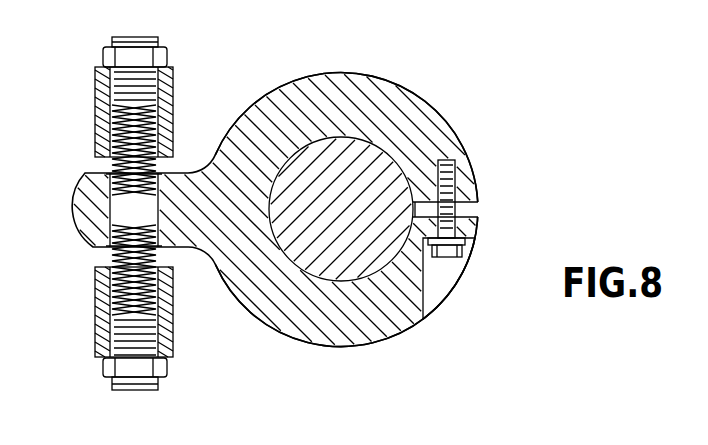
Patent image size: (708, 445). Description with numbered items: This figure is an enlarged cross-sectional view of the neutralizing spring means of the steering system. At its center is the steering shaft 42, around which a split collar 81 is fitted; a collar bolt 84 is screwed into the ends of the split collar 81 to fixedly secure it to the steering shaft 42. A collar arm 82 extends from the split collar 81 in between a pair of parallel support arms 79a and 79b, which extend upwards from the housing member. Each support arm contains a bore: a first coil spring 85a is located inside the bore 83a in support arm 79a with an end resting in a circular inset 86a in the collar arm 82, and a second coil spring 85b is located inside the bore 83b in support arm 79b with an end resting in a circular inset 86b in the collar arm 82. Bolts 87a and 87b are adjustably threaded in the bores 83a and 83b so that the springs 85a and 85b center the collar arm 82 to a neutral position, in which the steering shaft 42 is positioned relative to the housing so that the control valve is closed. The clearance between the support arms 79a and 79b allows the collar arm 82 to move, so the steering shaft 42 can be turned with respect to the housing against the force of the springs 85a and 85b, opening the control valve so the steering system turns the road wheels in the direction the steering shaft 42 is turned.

The steering shaft 42 is at (372, 272).
The split collar 81 is at (396, 85).
The collar arm 82 is at (73, 198).
The collar bolt 84 is at (462, 260).
The support arm 79a is at (175, 305).
The support arm 79b is at (176, 148).
The bore 83a is at (107, 260).
The bore 83b is at (99, 133).
The first coil spring 85a is at (110, 300).
The second coil spring 85b is at (150, 113).
The circular inset 86a is at (115, 252).
The circular inset 86b is at (113, 172).
The bolt 87a is at (118, 391).
The bolt 87b is at (138, 41).